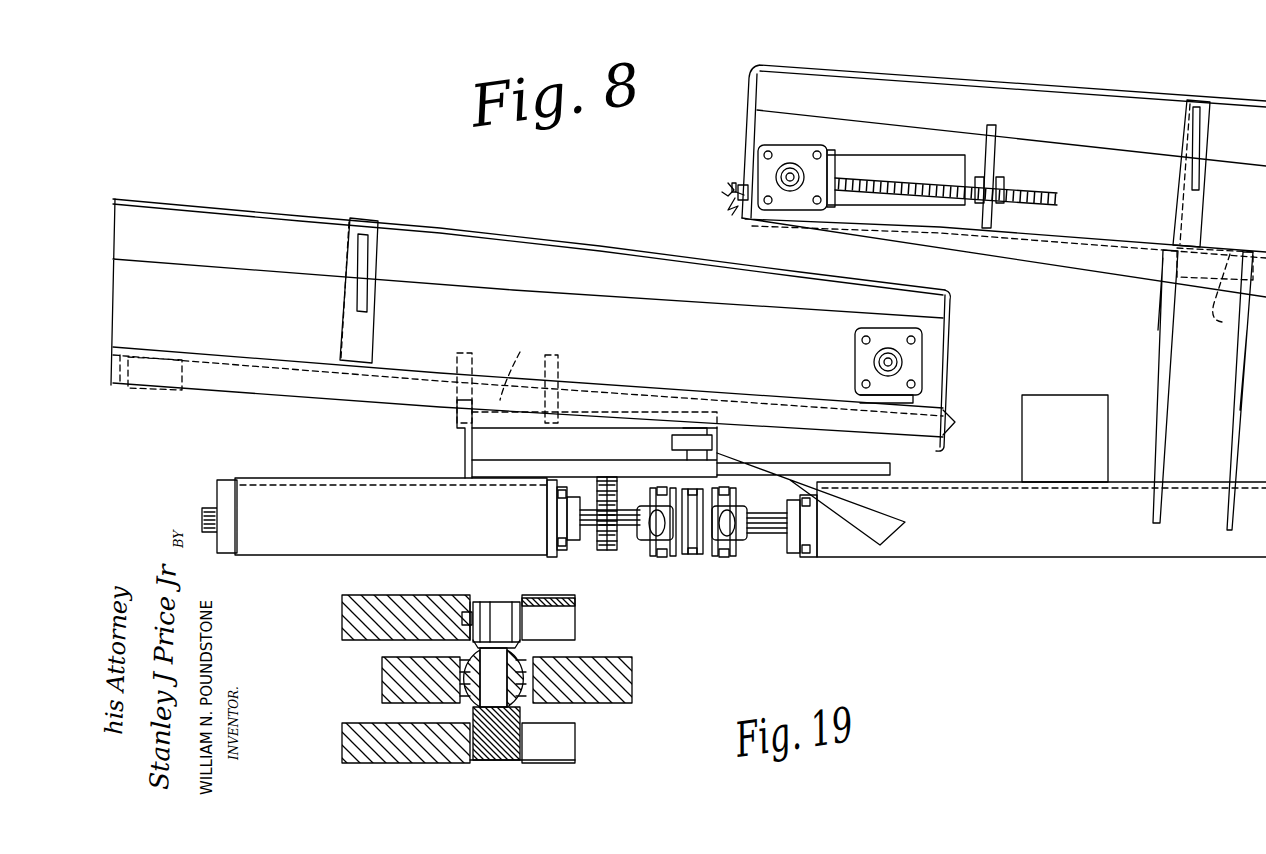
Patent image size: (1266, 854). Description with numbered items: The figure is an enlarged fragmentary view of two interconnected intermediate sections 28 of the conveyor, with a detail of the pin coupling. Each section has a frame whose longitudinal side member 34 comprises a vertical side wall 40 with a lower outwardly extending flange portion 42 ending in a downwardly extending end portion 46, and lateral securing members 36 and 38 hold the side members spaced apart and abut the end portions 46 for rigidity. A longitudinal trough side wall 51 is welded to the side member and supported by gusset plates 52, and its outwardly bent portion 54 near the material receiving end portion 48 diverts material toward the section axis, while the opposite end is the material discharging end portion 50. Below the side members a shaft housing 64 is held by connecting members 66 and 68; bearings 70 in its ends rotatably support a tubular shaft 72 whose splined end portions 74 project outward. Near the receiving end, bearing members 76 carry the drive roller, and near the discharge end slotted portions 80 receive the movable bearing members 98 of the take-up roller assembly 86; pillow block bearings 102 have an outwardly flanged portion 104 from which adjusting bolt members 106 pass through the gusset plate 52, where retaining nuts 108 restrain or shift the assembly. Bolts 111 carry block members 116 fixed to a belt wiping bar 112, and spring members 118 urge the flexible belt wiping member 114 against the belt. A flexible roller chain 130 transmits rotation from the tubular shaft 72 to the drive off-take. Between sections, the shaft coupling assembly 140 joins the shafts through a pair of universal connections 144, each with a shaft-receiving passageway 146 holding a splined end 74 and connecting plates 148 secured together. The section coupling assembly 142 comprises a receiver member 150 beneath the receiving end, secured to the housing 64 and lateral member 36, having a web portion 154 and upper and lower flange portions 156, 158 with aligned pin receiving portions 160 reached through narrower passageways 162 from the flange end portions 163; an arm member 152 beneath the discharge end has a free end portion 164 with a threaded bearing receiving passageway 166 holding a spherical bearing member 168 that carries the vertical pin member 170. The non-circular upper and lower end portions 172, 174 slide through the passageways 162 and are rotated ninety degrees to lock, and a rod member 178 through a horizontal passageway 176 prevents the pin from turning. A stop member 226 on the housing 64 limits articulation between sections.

In FIG. 8, the intermediate section 28 is at (220, 96).
In FIG. 8, the longitudinal side member 34 is at (205, 200).
In FIG. 8, the lateral securing member 36 is at (507, 378).
In FIG. 8, the lateral securing member 38 is at (1218, 296).
In FIG. 8, the vertical side wall 40 is at (317, 308).
In FIG. 8, the lower outwardly extending flange portion 42 is at (197, 355).
In FIG. 8, the downwardly extending end portion 46 is at (167, 378).
In FIG. 8, the material receiving end portion 48 is at (968, 358).
In FIG. 8, the material discharging end portion 50 is at (735, 98).
In FIG. 8, the longitudinal trough side wall 51 is at (262, 225).
In FIG. 8, the gusset plate 52 is at (347, 232).
In FIG. 8, the outwardly bent portion 54 is at (620, 248).
In FIG. 8, the shaft housing 64 is at (262, 492).
In FIG. 8, the connecting member 66 is at (1162, 378).
In FIG. 8, the connecting member 68 is at (458, 440).
In FIG. 8, the bearing 70 is at (567, 540).
In FIG. 8, the tubular shaft 72 is at (205, 510).
In FIG. 8, the splined end portion 74 is at (620, 525).
In FIG. 8, the bearing member 76 is at (860, 360).
In FIG. 8, the slotted portion 80 is at (935, 165).
In FIG. 8, the take-up roller assembly 86 is at (860, 170).
In FIG. 8, the movable bearing member 98 is at (805, 150).
In FIG. 8, the pillow block bearing 102 is at (790, 150).
In FIG. 8, the outwardly flanged portion 104 is at (845, 160).
In FIG. 8, the adjusting bolt member 106 is at (940, 165).
In FIG. 8, the retaining nut 108 is at (978, 178).
In FIG. 8, the bolt 111 is at (735, 192).
In FIG. 8, the belt wiping bar 112 is at (728, 190).
In FIG. 8, the flexible belt wiping member 114 is at (732, 205).
In FIG. 8, the block member 116 is at (740, 185).
In FIG. 8, the spring member 118 is at (733, 185).
In FIG. 8, the flexible roller chain 130 is at (615, 486).
In FIG. 8, the shaft coupling assembly 140 is at (707, 560).
In FIG. 8, the section coupling assembly 142 is at (760, 480).
In FIG. 8, the universal connection 144 is at (670, 548).
In FIG. 8, the shaft-receiving passageway 146 is at (640, 532).
In FIG. 8, the connecting plate 148 is at (690, 555).
In FIG. 8, the receiver member 150 is at (640, 450).
In FIG. 19, the receiver member 150 is at (345, 738).
In FIG. 8, the arm member 152 is at (672, 450).
In FIG. 19, the arm member 152 is at (632, 680).
In FIG. 8, the web portion 154 is at (560, 456).
In FIG. 8, the upper flange portion 156 is at (572, 420).
In FIG. 19, the upper flange portion 156 is at (400, 583).
In FIG. 8, the lower flange portion 158 is at (487, 470).
In FIG. 19, the lower flange portion 158 is at (425, 760).
In FIG. 19, the pin receiving portion 160 is at (473, 608).
In FIG. 19, the passageway 162 is at (565, 618).
In FIG. 19, the flange end portion 163 is at (578, 633).
In FIG. 19, the free end portion 164 is at (382, 680).
In FIG. 19, the threaded bearing receiving passageway 166 is at (540, 685).
In FIG. 19, the spherical bearing member 168 is at (460, 708).
In FIG. 19, the pin member 170 is at (520, 650).
In FIG. 19, the upper end portion 172 is at (496, 608).
In FIG. 19, the lower end portion 174 is at (505, 760).
In FIG. 19, the horizontal passageway 176 is at (465, 612).
In FIG. 19, the rod member 178 is at (450, 655).
In FIG. 8, the stop member 226 is at (1022, 455).